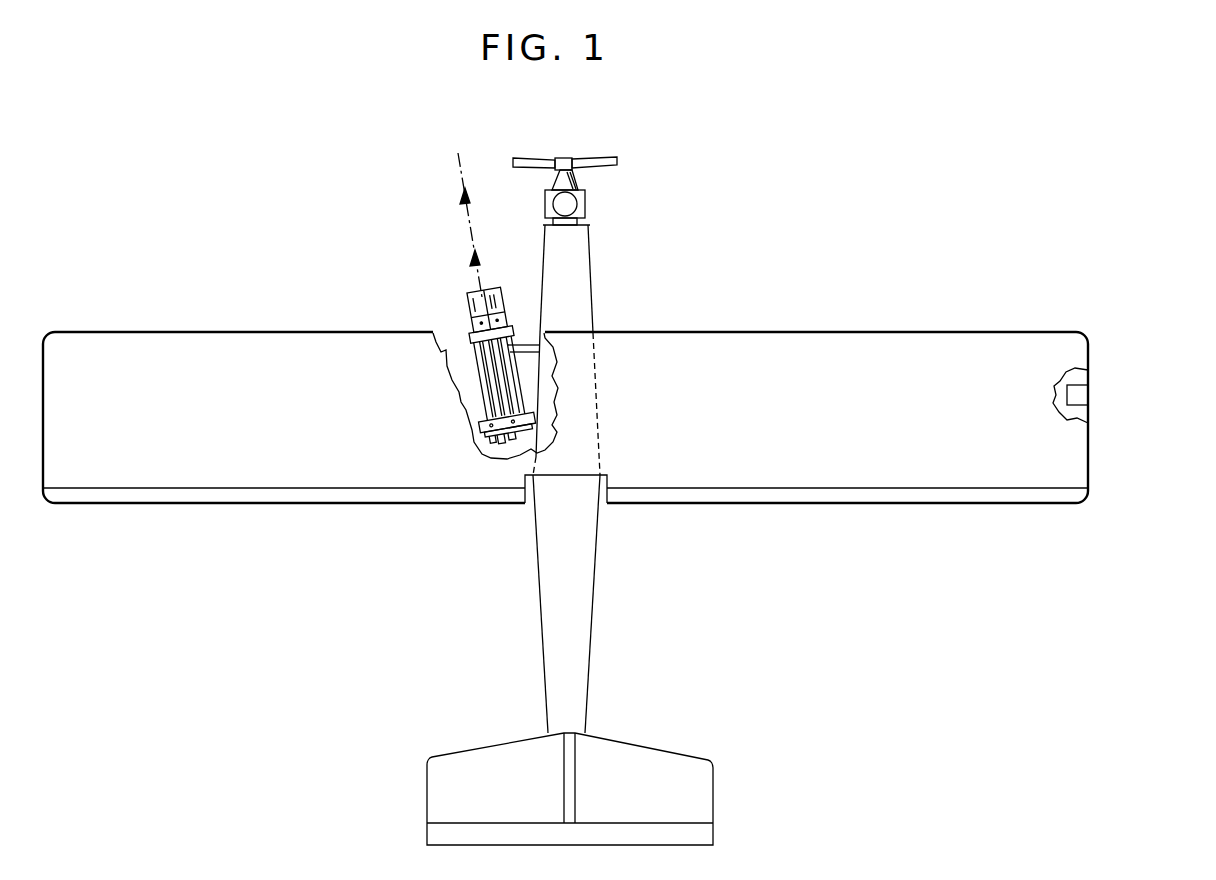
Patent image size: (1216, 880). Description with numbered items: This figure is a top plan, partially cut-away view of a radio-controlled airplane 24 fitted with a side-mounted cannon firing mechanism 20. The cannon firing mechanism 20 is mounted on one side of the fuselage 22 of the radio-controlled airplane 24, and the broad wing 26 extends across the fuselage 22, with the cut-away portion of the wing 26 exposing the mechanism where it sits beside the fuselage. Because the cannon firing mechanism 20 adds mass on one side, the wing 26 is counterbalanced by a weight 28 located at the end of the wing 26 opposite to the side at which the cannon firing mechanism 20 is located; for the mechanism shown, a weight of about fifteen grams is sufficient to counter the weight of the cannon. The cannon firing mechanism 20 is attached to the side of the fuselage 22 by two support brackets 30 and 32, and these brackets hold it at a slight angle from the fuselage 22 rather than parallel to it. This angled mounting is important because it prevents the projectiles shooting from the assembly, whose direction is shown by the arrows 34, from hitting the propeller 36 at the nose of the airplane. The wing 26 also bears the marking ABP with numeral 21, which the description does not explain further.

The cannon firing mechanism 20 is at (489, 354).
The airborne platform wing 21 is at (565, 417).
The fuselage 22 is at (578, 632).
The radio-controlled airplane 24 is at (505, 539).
The wing 26 is at (562, 421).
The weight 28 is at (1092, 397).
The support bracket 30 is at (518, 344).
The support bracket 32 is at (528, 424).
The arrows 34 is at (462, 197).
The propeller 36 is at (528, 157).